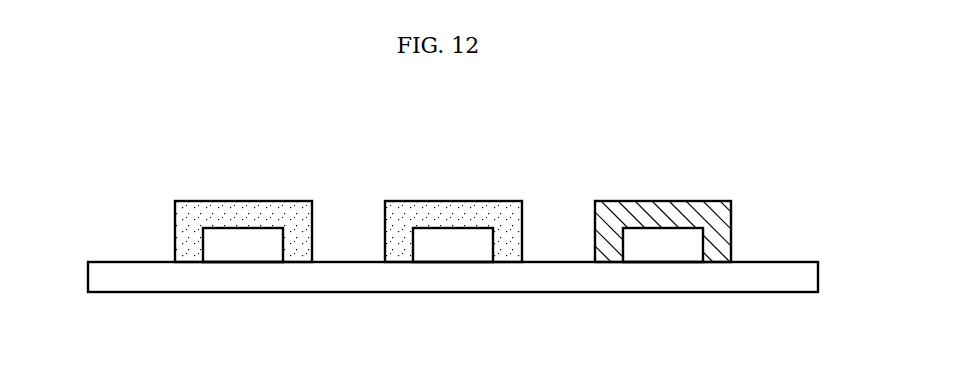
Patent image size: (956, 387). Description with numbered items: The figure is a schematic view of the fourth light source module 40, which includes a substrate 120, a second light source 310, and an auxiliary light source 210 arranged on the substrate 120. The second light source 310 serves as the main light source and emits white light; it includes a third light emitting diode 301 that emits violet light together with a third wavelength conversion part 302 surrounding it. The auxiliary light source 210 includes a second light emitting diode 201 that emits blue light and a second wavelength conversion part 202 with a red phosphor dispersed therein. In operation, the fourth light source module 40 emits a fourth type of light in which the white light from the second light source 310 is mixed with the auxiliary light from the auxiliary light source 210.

The fourth light source module 40 is at (56, 105).
The substrate 120 is at (150, 285).
The auxiliary light source 210 is at (697, 153).
The second light emitting diode 201 is at (645, 236).
The second wavelength conversion part 202 is at (700, 210).
The second light source 310 is at (277, 153).
The third light emitting diode 301 is at (226, 236).
The third wavelength conversion part 302 is at (280, 210).